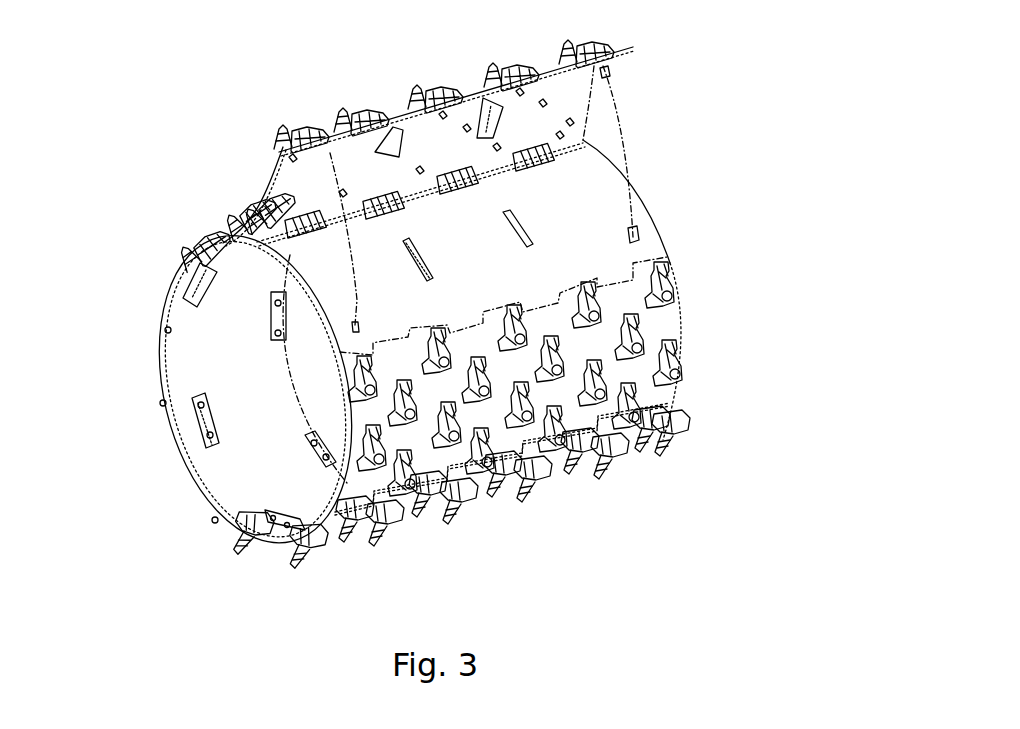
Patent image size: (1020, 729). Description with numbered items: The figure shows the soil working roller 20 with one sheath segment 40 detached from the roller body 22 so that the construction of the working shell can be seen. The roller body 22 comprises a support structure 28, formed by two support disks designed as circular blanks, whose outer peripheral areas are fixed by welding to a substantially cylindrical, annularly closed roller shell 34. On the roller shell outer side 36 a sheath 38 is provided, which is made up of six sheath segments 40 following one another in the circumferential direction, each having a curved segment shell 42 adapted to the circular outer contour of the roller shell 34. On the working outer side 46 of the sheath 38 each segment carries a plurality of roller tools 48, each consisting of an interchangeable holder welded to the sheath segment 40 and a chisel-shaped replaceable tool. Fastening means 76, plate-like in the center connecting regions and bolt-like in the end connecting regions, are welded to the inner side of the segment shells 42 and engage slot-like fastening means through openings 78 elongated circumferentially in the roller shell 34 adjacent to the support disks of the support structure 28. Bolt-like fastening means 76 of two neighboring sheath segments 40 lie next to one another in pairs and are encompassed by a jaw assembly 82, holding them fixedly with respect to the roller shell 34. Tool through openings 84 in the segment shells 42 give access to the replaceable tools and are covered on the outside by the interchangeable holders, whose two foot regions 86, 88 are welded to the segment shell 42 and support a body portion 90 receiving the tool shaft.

The soil working roller 20 is at (775, 140).
The roller body 22 is at (208, 528).
The support structure 28 is at (268, 372).
The roller shell 34 is at (652, 221).
The roller shell outer side 36 is at (592, 190).
The sheath 38 is at (683, 417).
The sheath segment 40 is at (594, 100).
The segment shell 42 is at (283, 183).
The working outer side 46 is at (508, 517).
The roller tool 48 is at (687, 357).
The fastening means 76 is at (382, 147).
The fastening means through opening 78 is at (413, 252).
The jaw assembly 82 is at (192, 428).
The tool through opening 84 is at (273, 217).
The foot region 86 is at (353, 440).
The foot region 88 is at (368, 470).
The body portion 90 is at (340, 527).